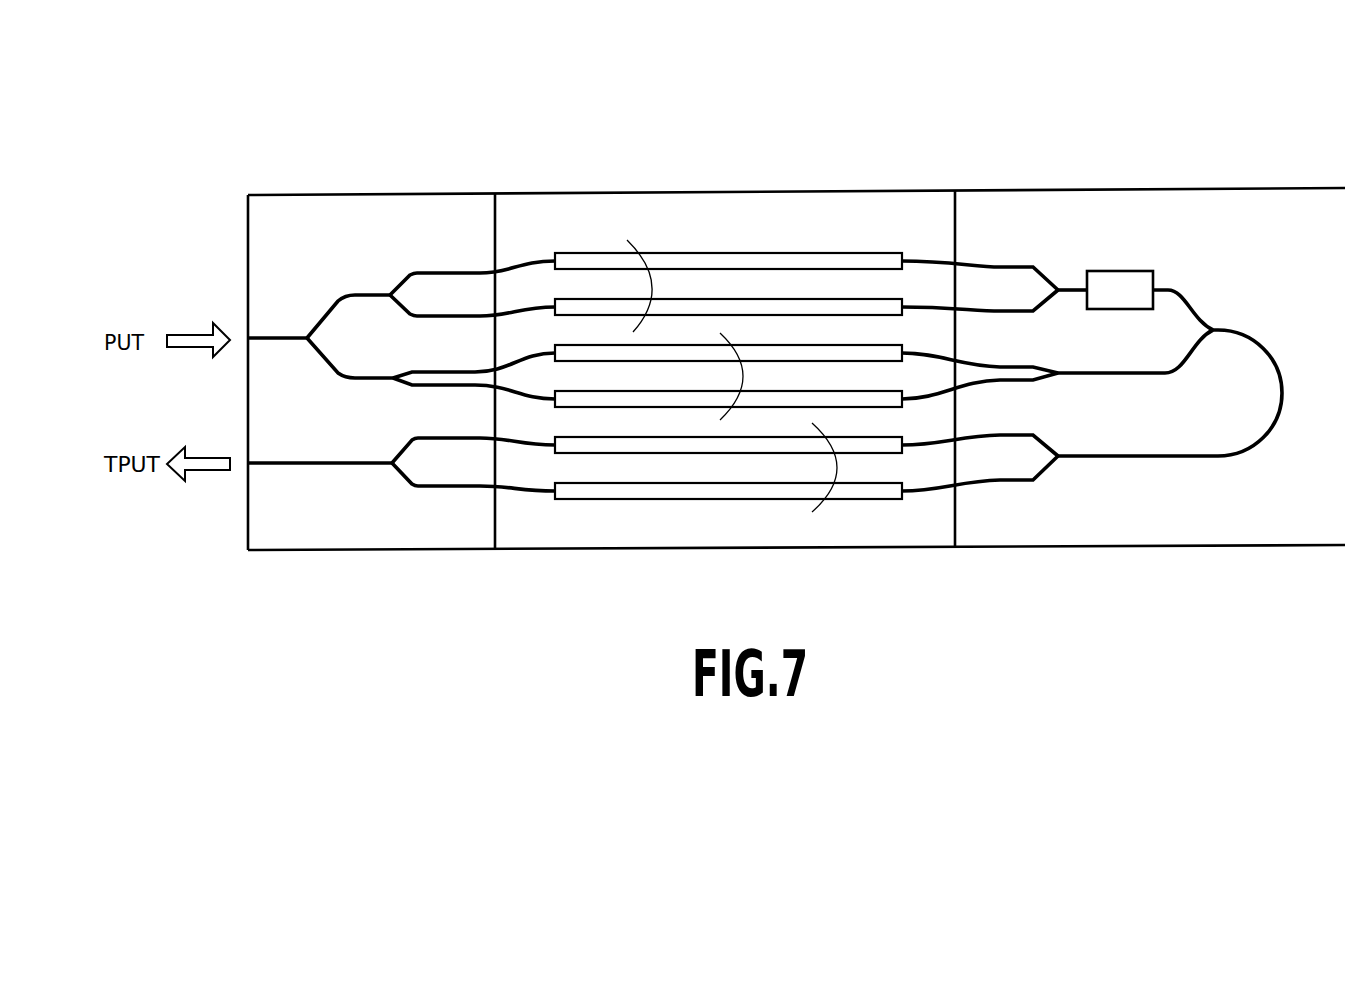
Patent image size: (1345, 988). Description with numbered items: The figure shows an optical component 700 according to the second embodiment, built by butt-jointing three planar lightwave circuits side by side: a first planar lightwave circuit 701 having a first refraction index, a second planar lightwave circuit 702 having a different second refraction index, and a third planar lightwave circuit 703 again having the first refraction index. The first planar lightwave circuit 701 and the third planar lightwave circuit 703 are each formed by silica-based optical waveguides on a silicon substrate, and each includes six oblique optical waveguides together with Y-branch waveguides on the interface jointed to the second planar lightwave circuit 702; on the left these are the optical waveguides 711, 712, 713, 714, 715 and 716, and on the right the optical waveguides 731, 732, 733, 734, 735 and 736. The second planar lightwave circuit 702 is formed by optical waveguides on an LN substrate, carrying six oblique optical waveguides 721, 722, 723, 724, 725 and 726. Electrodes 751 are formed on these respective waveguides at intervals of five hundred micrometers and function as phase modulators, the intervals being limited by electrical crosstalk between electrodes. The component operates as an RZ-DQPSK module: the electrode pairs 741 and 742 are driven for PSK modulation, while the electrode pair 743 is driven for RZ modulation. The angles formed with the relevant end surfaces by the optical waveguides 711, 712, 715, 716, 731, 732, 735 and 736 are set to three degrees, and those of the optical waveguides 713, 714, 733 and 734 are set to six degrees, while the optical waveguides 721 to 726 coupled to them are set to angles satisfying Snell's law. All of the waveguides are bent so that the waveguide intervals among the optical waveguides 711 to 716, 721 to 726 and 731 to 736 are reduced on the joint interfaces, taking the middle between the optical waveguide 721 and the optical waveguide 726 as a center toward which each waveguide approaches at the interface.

The optical component 700 is at (918, 105).
The first planar lightwave circuit 701 is at (292, 194).
The second planar lightwave circuit 702 is at (750, 190).
The third planar lightwave circuit 703 is at (1190, 188).
The oblique optical waveguide 711 is at (428, 272).
The oblique optical waveguide 712 is at (424, 320).
The oblique optical waveguide 713 is at (430, 370).
The oblique optical waveguide 714 is at (432, 388).
The oblique optical waveguide 715 is at (433, 436).
The oblique optical waveguide 716 is at (436, 488).
The oblique optical waveguide 721 is at (510, 264).
The oblique optical waveguide 722 is at (510, 310).
The oblique optical waveguide 723 is at (510, 358).
The oblique optical waveguide 724 is at (510, 392).
The oblique optical waveguide 725 is at (510, 442).
The oblique optical waveguide 726 is at (510, 488).
The oblique optical waveguide 731 is at (1025, 268).
The oblique optical waveguide 732 is at (1028, 315).
The oblique optical waveguide 733 is at (972, 363).
The oblique optical waveguide 734 is at (972, 385).
The oblique optical waveguide 735 is at (1025, 435).
The oblique optical waveguide 736 is at (1005, 483).
The electrode pair 741 is at (655, 246).
The electrode pair 742 is at (744, 334).
The electrode pair 743 is at (814, 516).
The electrodes 751 is at (812, 252).